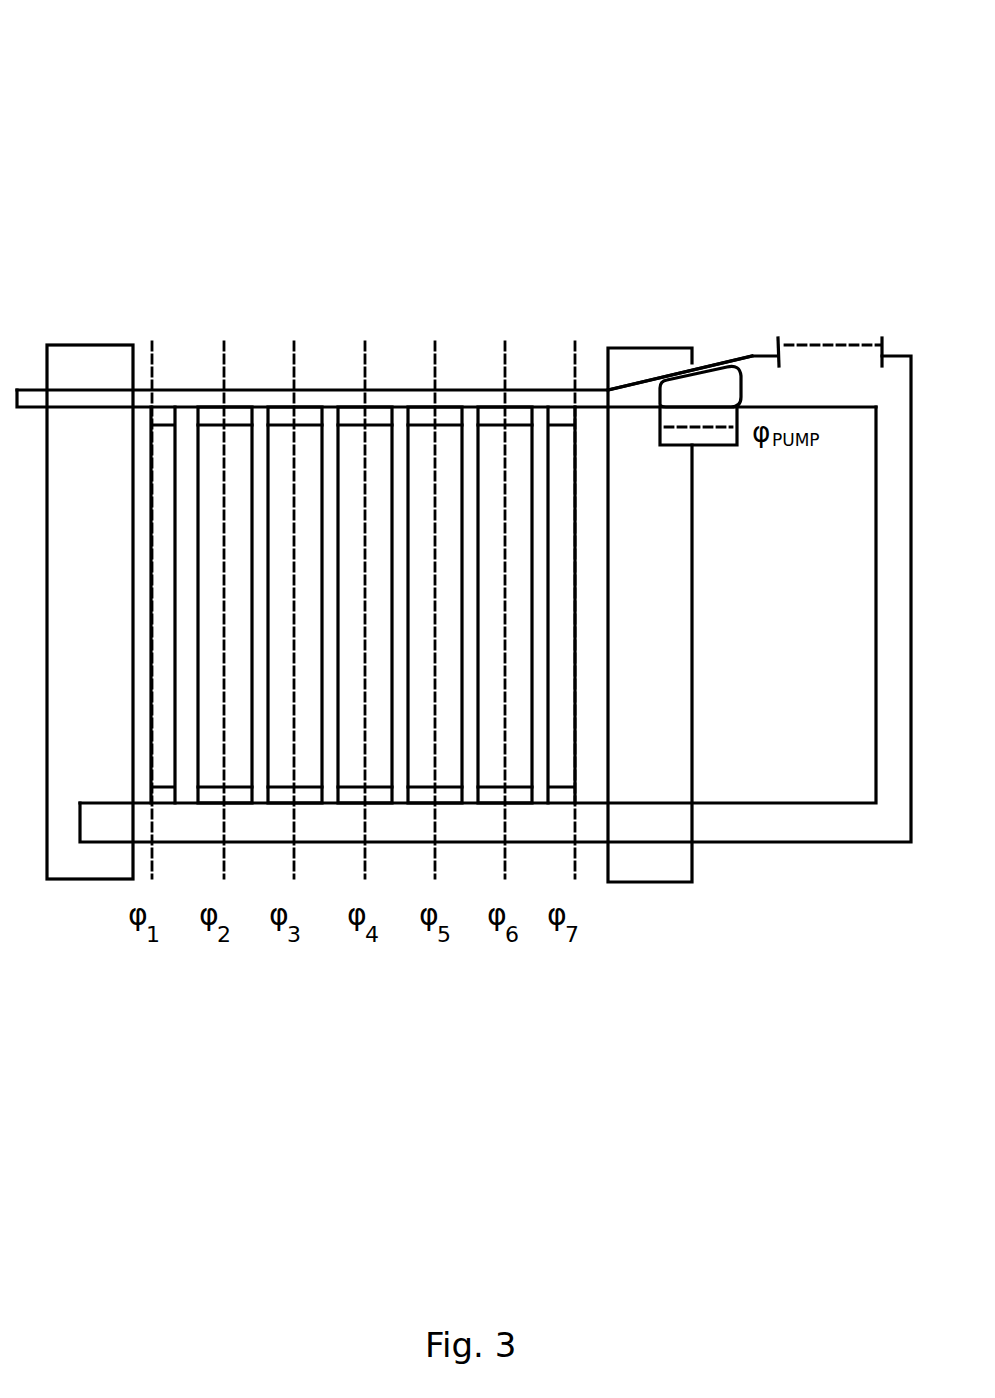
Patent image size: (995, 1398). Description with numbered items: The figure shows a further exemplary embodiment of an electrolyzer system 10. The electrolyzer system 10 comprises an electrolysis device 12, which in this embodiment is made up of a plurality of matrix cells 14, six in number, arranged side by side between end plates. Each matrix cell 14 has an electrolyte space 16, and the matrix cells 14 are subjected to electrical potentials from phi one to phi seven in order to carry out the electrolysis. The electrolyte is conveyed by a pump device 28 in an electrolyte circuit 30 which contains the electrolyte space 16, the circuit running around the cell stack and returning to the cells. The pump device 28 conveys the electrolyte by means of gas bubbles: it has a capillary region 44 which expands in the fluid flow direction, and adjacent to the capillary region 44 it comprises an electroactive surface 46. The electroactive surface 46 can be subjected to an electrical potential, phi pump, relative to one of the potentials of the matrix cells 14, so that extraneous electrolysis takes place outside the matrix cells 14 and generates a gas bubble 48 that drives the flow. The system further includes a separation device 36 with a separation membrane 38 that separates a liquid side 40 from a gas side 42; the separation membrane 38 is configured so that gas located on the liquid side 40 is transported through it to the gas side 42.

The electrolyzer system 10 is at (266, 82).
The electrolyzer device 12 is at (345, 241).
The matrix cell 14 is at (190, 315).
The electrolyte space 16 is at (190, 513).
The pump device 28 is at (678, 283).
The electrolyte circuit 30 is at (880, 643).
The separation device 36 is at (787, 281).
The separation membrane 38 is at (833, 343).
The liquid side 40 is at (776, 352).
The gas side 42 is at (823, 289).
The capillary region 44 is at (665, 382).
The electroactive surface 46 is at (713, 428).
The gas bubble 48 is at (673, 396).